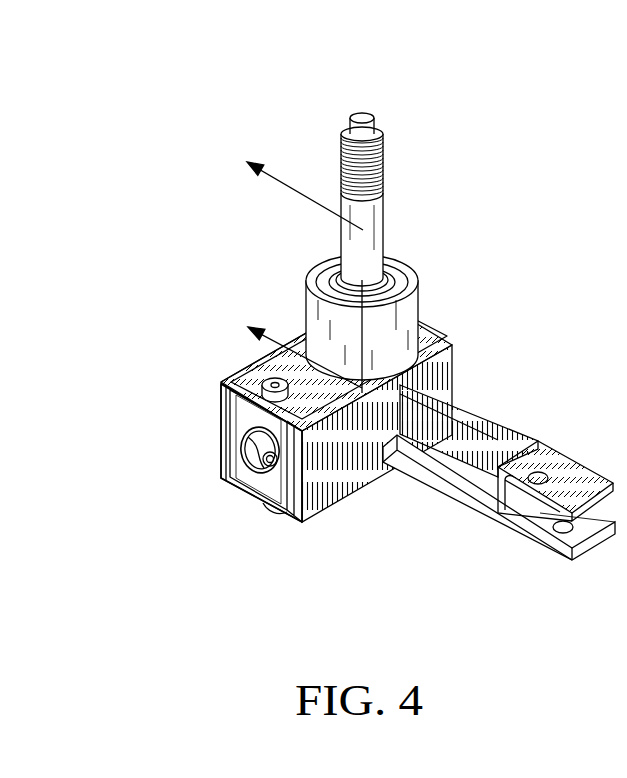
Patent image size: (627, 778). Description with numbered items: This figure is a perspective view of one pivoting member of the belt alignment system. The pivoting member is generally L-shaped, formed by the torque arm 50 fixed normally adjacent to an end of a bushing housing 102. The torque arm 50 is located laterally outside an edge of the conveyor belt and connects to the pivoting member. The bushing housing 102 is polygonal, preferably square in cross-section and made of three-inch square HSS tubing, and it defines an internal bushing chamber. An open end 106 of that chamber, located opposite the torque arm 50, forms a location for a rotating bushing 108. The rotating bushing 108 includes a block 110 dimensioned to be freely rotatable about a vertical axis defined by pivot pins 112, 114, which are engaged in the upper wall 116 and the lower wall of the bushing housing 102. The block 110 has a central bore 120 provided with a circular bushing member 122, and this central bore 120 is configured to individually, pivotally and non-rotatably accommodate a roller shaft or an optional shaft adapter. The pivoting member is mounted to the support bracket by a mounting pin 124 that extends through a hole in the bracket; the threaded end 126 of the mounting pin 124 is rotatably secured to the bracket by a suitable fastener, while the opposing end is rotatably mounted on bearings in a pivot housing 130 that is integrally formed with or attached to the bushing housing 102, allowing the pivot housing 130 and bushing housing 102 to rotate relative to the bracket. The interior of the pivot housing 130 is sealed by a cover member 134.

The torque arm 50 is at (478, 508).
The bushing housing 102 is at (325, 493).
The open end 106 is at (185, 428).
The rotating bushing 108 is at (240, 417).
The block 110 is at (240, 465).
The pivot pin 112 is at (270, 382).
The pivot pin 114 is at (265, 508).
The upper wall 116 is at (288, 372).
The central bore 120 is at (273, 472).
The circular bushing member 122 is at (242, 443).
The mounting pin 124 is at (378, 217).
The threaded end 126 is at (341, 163).
The pivot housing 130 is at (415, 319).
The cover member 134 is at (393, 280).